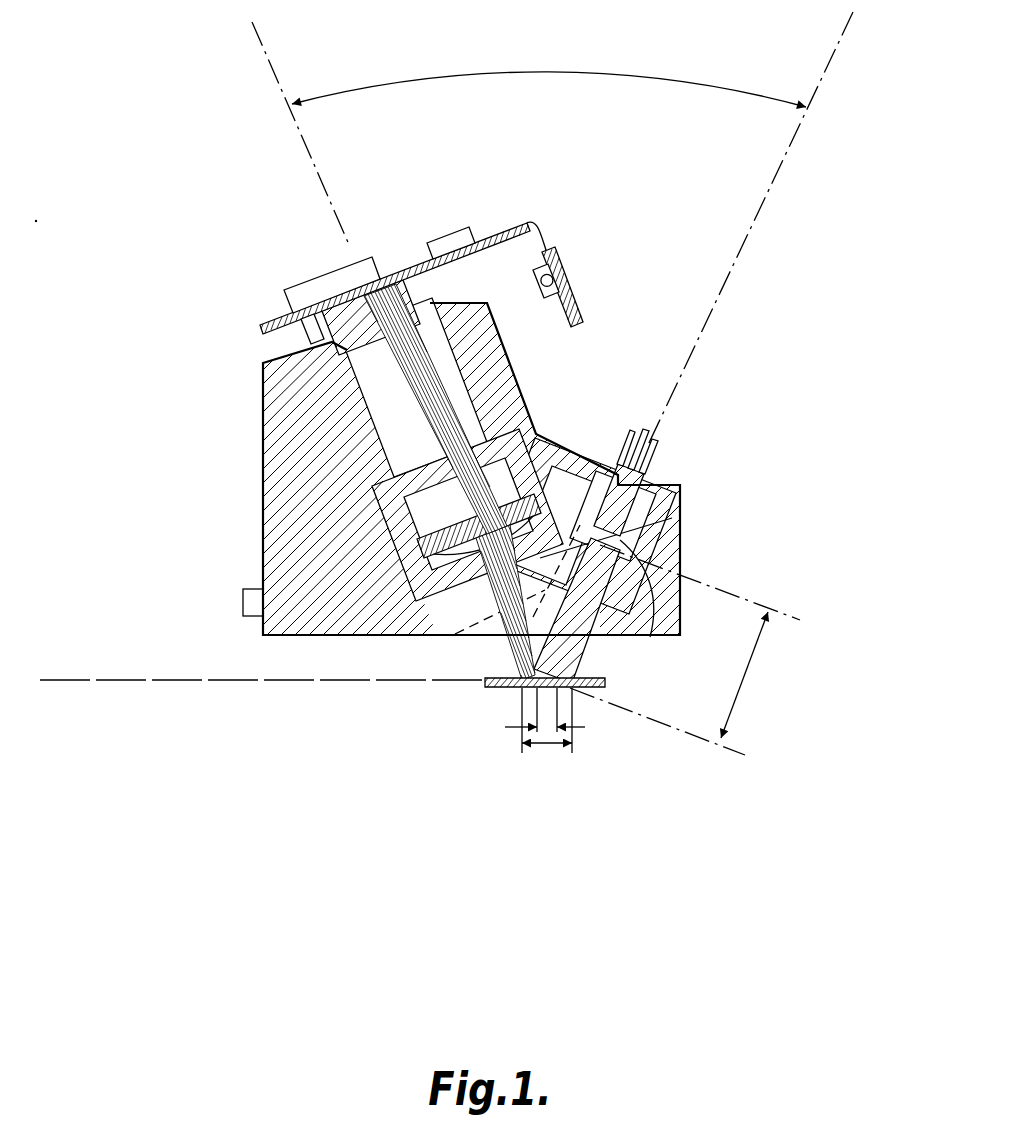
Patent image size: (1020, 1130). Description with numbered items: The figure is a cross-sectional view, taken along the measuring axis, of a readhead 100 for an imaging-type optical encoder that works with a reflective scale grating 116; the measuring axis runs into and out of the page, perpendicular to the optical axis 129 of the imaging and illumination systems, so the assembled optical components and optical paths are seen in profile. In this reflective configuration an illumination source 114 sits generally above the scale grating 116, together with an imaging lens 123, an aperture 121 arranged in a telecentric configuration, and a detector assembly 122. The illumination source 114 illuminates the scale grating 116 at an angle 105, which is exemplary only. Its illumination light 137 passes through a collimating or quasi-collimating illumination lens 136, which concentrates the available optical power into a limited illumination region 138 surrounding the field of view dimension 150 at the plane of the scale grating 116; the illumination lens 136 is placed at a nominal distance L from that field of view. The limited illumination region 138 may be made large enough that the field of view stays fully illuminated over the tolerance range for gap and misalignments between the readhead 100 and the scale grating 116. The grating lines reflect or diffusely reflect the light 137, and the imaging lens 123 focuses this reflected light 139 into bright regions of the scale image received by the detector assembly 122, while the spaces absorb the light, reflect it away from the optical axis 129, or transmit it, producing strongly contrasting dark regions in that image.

The readhead 100 is at (821, 382).
The angle 105 is at (545, 72).
The illumination source 114 is at (650, 490).
The reflective scale grating 116 is at (583, 690).
The aperture 121 is at (453, 442).
The detector assembly 122 is at (352, 340).
The imaging lens 123 is at (485, 510).
The optical axis 129 is at (461, 486).
The reflected light 139 is at (447, 648).
The illumination lens 136 is at (653, 577).
The illumination light 137 is at (570, 653).
The limited illumination region 138 is at (546, 752).
The field of view dimension 150 is at (505, 727).
The nominal distance L is at (742, 678).